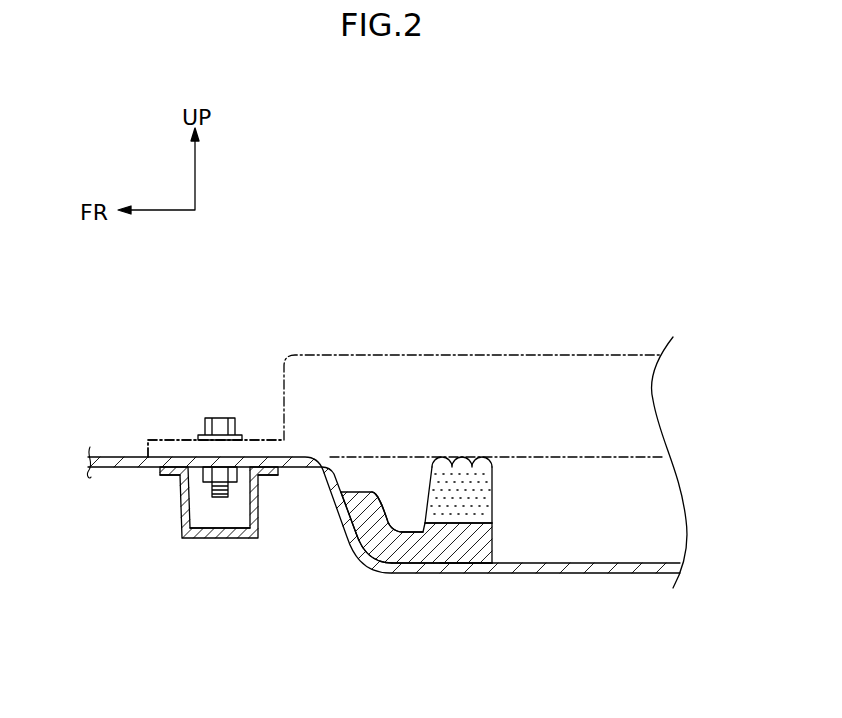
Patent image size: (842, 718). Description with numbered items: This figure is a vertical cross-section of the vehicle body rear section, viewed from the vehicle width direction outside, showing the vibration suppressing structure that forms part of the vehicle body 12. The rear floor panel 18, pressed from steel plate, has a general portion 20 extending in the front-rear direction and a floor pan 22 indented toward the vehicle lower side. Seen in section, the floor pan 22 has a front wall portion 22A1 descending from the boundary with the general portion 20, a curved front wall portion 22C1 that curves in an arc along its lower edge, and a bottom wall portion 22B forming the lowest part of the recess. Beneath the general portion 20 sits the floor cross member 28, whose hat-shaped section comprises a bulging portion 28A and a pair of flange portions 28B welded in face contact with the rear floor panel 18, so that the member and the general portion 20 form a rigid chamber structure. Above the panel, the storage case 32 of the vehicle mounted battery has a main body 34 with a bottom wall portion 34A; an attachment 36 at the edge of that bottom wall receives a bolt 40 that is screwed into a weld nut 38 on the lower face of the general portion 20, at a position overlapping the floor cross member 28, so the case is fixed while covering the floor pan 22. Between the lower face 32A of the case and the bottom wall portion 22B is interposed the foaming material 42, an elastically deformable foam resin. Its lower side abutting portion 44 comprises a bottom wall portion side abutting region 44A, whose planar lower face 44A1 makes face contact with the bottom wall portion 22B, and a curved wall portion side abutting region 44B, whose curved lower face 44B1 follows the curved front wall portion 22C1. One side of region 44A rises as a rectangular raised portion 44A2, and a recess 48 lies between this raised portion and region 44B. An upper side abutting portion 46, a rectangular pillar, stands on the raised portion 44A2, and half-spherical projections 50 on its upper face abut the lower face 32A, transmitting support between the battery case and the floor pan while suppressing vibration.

The vehicle body 12 is at (543, 231).
The storage case 32 is at (569, 321).
The main body 34 is at (393, 353).
The bottom wall portion 34A is at (604, 446).
The lower face 32A is at (641, 463).
The general portion 20 is at (112, 456).
The floor pan 22 is at (635, 577).
The front wall portion 22A1 is at (333, 480).
The curved front wall portion 22C1 is at (353, 565).
The bottom wall portion 22B is at (577, 576).
The attachment 36 is at (167, 441).
The bolt 40 is at (221, 418).
The weld nut 38 is at (203, 473).
The floor cross member 28 is at (178, 538).
The bulging portion 28A is at (217, 539).
The flange portion 28B is at (160, 472).
The foaming material 42 is at (494, 430).
The lower side abutting portion 44 is at (495, 550).
The recess 48 is at (397, 531).
The raised portion 44A2 is at (493, 523).
The bottom wall portion side abutting region 44A is at (447, 565).
The lower face 44A1 is at (480, 568).
The curved wall portion side abutting region 44B is at (343, 526).
The lower face 44B1 is at (358, 552).
The upper side abutting portion 46 is at (480, 497).
The projection 50 is at (481, 458).
The rear floor panel 18 is at (489, 605).